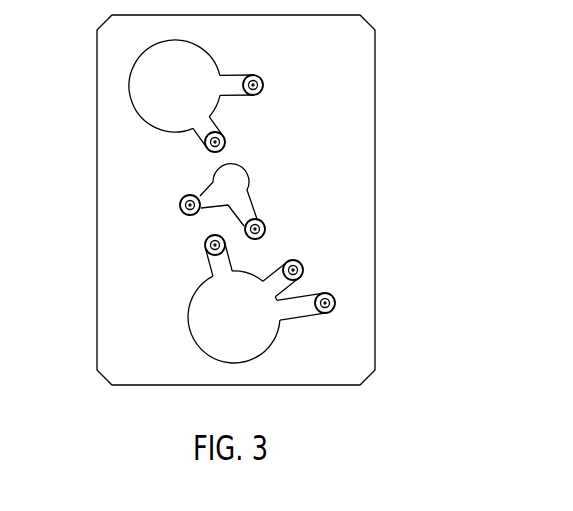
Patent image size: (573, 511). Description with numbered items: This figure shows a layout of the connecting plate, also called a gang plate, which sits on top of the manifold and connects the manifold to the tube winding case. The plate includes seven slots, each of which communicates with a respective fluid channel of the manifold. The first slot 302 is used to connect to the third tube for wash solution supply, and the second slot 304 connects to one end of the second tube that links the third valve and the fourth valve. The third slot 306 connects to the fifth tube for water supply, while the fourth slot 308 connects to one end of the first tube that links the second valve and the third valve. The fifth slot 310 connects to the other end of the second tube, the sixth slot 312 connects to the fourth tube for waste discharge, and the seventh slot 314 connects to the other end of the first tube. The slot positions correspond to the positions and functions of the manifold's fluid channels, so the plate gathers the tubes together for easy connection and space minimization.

The first slot 302 is at (263, 86).
The second slot 304 is at (205, 143).
The third slot 306 is at (182, 211).
The fourth slot 308 is at (265, 230).
The fifth slot 310 is at (205, 248).
The sixth slot 312 is at (303, 268).
The seventh slot 314 is at (335, 302).